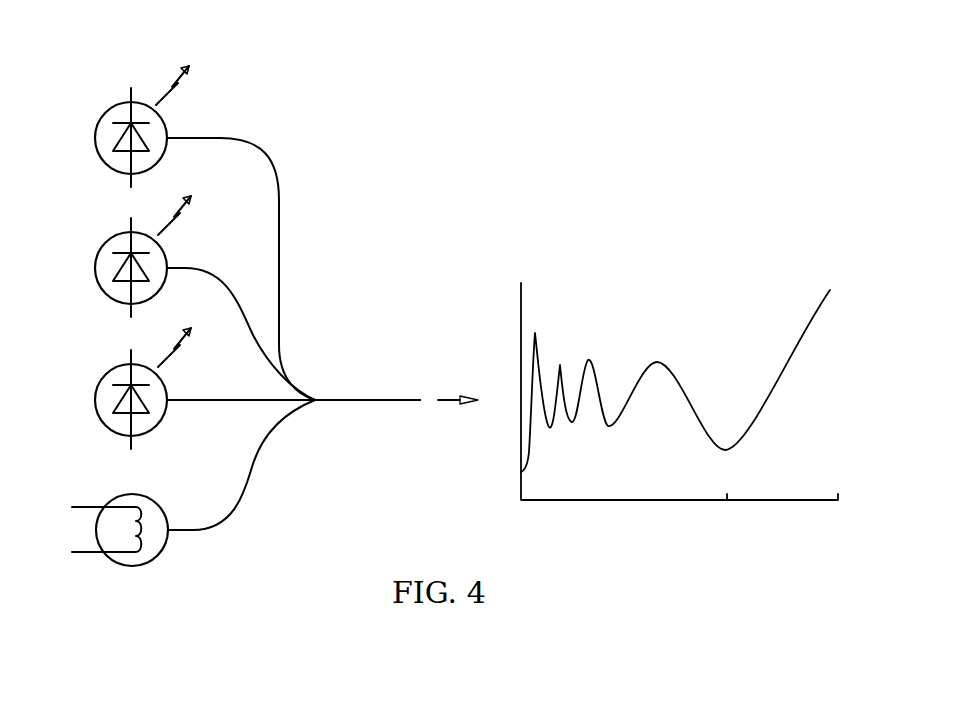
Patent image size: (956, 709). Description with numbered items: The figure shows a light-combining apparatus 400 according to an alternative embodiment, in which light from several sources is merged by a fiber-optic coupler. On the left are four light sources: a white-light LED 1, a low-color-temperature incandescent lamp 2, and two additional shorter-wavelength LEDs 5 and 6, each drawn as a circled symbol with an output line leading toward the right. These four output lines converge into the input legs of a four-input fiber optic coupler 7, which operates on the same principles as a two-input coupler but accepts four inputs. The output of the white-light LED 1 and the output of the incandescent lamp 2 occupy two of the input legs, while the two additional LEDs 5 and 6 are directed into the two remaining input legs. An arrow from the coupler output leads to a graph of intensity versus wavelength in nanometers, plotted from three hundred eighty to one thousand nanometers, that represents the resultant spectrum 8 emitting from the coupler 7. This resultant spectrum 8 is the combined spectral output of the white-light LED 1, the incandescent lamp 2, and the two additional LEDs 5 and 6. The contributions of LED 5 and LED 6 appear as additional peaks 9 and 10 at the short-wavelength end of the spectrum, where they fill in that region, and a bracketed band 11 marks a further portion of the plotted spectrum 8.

The white-light LED 1 is at (100, 377).
The low-color-temperature incandescent lamp 2 is at (115, 567).
The LED 5 is at (96, 260).
The LED 6 is at (96, 148).
The four-input fiber optic coupler 7 is at (323, 398).
The resultant spectrum 8 is at (495, 238).
The additional peak 9 is at (535, 340).
The additional peak 10 is at (560, 366).
The wavelength band of third LED emission 11 is at (688, 349).
The light-combining apparatus 400 is at (485, 176).